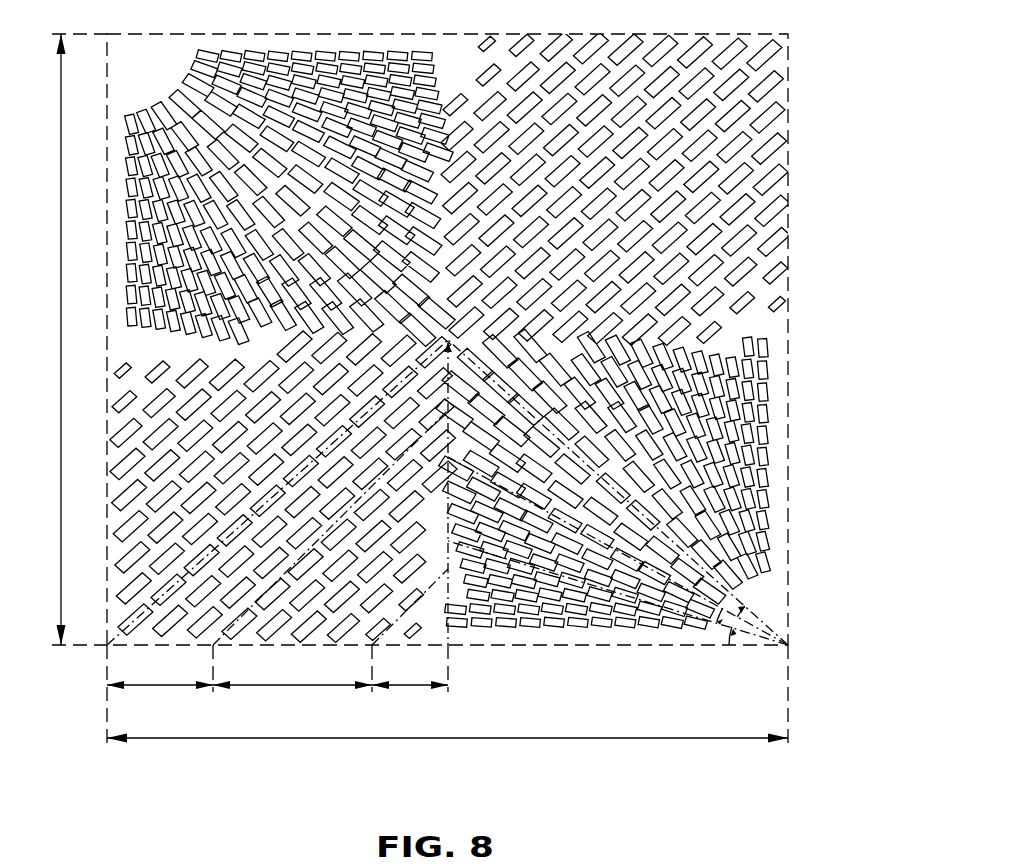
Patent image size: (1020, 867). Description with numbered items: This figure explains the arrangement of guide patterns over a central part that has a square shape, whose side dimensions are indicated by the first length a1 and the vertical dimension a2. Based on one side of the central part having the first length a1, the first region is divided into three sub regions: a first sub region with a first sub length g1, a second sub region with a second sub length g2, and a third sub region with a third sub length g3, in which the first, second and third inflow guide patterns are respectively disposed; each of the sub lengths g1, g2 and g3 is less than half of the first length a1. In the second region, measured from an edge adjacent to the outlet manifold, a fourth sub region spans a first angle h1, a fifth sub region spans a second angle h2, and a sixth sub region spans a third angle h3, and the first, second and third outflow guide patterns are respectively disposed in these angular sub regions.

The first length a1 is at (447, 728).
The height of the meta-surface element pattern region a2 is at (48, 339).
The first sub length g1 is at (160, 674).
The second sub length g2 is at (292, 674).
The third sub length g3 is at (410, 674).
The first angle h1 is at (746, 609).
The second angle h2 is at (718, 620).
The third angle h3 is at (732, 640).